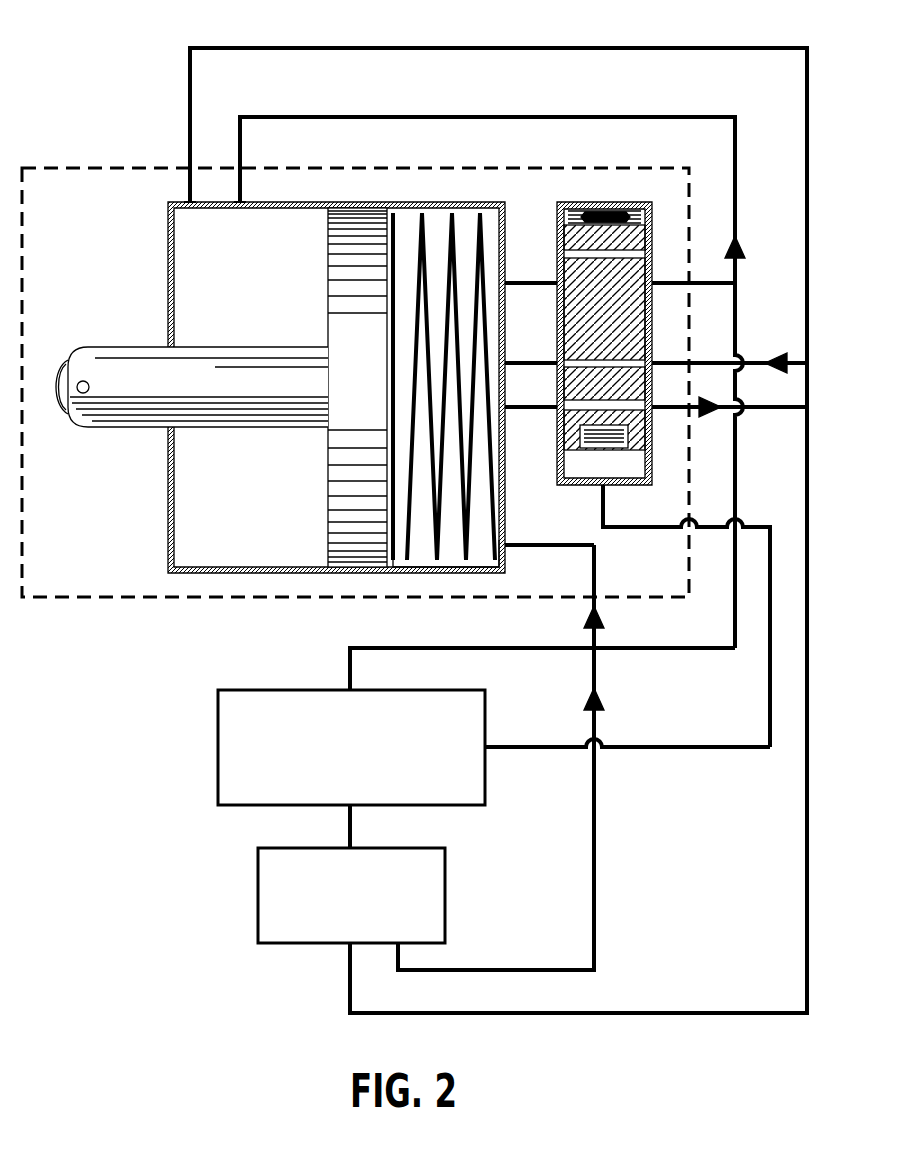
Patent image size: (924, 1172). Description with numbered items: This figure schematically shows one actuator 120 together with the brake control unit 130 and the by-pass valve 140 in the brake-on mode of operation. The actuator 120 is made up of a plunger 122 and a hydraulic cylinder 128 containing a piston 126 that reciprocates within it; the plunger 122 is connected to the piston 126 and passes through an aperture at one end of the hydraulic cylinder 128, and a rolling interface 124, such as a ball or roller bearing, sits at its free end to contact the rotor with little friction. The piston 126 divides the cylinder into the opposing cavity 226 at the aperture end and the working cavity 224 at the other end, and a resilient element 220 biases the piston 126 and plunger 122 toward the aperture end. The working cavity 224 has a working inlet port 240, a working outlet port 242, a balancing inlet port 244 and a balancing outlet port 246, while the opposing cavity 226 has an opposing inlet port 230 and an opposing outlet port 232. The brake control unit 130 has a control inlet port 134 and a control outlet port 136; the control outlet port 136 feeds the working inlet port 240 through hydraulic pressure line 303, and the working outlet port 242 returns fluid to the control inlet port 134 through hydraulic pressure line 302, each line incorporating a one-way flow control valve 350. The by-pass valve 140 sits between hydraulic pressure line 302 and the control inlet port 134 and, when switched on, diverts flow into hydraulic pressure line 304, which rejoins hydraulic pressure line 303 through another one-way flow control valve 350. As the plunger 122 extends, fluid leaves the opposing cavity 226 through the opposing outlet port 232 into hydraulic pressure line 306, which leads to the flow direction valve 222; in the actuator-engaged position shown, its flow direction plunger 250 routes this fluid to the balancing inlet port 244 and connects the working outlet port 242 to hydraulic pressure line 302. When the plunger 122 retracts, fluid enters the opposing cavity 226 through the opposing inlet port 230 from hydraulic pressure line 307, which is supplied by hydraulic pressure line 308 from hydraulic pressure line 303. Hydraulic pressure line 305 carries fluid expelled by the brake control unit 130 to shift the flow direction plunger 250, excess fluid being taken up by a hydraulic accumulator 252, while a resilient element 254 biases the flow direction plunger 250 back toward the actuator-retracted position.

The actuator 120 is at (80, 583).
The plunger 122 is at (237, 408).
The rolling interface 124 is at (60, 405).
The piston 126 is at (336, 325).
The hydraulic cylinder 128 is at (170, 296).
The brake control unit 130 is at (218, 742).
The control inlet port 134 is at (345, 818).
The control outlet port 136 is at (350, 688).
The by-pass valve 140 is at (258, 893).
The resilient element 220 is at (452, 228).
The flow direction valve 222 is at (601, 207).
The working cavity 224 is at (455, 560).
The opposing cavity 226 is at (182, 527).
The opposing inlet port 230 is at (240, 206).
The opposing outlet port 232 is at (188, 206).
The working inlet port 240 is at (509, 547).
The working outlet port 242 is at (509, 410).
The balancing inlet port 244 is at (509, 362).
The balancing outlet port 246 is at (508, 280).
The flow direction plunger 250 is at (637, 318).
The hydraulic accumulator 252 is at (615, 450).
The resilient element 254 is at (648, 218).
The hydraulic pressure line 302 is at (703, 1013).
The hydraulic pressure line 303 is at (468, 645).
The hydraulic pressure line 304 is at (594, 825).
The hydraulic pressure line 305 is at (740, 750).
The hydraulic pressure line 306 is at (385, 45).
The hydraulic pressure line 307 is at (430, 117).
The hydraulic pressure line 308 is at (720, 651).
The one-way flow control valve 350 is at (745, 250).